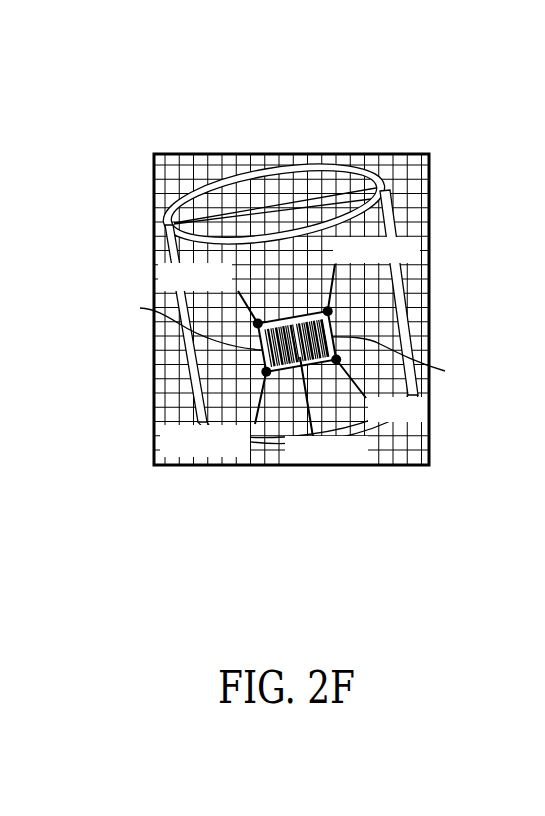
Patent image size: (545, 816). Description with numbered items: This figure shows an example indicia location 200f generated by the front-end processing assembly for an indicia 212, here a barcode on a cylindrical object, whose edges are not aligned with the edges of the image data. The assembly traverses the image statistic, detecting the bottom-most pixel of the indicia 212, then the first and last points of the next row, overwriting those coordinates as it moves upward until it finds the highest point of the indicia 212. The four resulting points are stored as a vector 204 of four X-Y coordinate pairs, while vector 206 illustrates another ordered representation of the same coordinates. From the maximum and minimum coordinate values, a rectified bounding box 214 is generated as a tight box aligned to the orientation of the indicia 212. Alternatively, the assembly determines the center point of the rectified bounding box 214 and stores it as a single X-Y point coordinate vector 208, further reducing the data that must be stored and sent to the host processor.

The indicia location 200f is at (218, 105).
The vector of four X-Y point coordinate pairs 204 is at (173, 465).
The vector 206 is at (411, 465).
The single X-Y point coordinate vector 208 is at (293, 465).
The indicia 212 is at (140, 307).
The rectified bounding box 214 is at (445, 371).